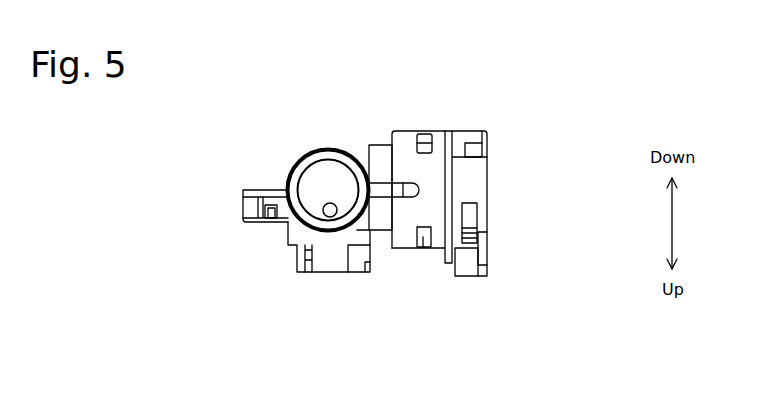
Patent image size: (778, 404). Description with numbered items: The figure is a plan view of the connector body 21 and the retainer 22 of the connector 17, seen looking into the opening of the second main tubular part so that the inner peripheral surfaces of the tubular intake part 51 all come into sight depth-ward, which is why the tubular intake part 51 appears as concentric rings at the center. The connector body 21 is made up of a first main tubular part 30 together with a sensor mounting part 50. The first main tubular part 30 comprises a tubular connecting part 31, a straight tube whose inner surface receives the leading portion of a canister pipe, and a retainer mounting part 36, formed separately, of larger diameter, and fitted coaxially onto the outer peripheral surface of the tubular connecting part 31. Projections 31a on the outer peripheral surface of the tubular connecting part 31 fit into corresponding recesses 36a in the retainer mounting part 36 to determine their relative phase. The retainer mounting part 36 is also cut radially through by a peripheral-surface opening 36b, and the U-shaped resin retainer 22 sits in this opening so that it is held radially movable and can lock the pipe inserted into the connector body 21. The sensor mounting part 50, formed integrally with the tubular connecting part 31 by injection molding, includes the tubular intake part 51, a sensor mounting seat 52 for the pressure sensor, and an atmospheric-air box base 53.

The connector 17 is at (514, 102).
The connector body 21 is at (296, 274).
The retainer 22 is at (481, 271).
The first main tubular part 30 is at (452, 344).
The tubular connecting part 31 is at (377, 230).
The projection 31a is at (422, 245).
The retainer mounting part 36 is at (402, 248).
The recess 36a is at (433, 134).
The peripheral-surface opening 36b is at (466, 250).
The sensor mounting part 50 is at (297, 156).
The tubular intake part 51 is at (323, 155).
The sensor mounting seat 52 is at (355, 273).
The atmospheric-air box base 53 is at (258, 222).